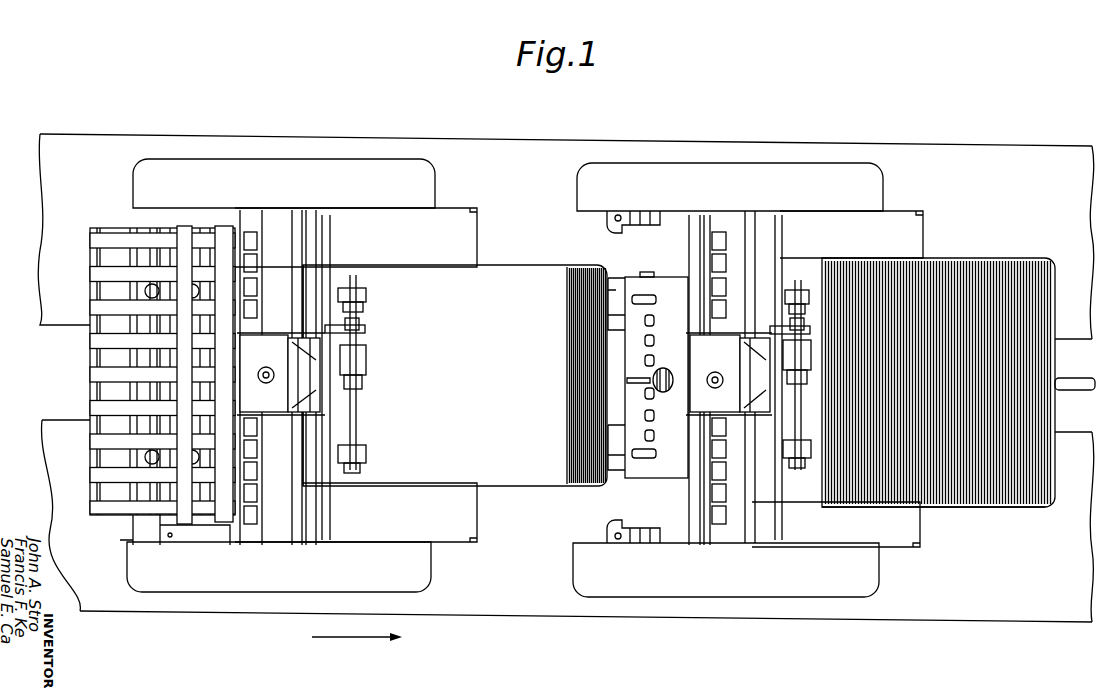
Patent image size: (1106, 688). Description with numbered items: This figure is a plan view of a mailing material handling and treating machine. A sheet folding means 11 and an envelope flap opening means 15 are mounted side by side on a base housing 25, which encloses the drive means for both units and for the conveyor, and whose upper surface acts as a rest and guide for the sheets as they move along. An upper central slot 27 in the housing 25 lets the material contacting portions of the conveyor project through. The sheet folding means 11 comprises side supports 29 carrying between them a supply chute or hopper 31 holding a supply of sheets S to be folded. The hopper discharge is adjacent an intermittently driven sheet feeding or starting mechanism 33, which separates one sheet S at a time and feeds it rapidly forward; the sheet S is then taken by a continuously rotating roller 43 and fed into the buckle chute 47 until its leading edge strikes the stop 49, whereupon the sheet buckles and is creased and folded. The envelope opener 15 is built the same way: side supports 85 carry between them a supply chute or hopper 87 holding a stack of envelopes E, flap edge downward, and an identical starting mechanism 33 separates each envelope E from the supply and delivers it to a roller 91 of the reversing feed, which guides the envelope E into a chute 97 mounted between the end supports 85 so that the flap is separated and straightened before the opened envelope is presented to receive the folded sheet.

The sheet folding means 11 is at (283, 155).
The envelope flap opening means 15 is at (782, 157).
The base housing 25 is at (1003, 146).
The upper central slot 27 is at (1068, 344).
The side supports 29 is at (388, 206).
The supply chute or hopper 31 is at (513, 490).
The sheet feeding or starting mechanism 33 is at (372, 352).
The continuously rotating roller 43 is at (282, 247).
The buckle chute 47 is at (157, 507).
The stop 49 is at (196, 425).
The side supports 85 is at (883, 191).
The supply chute or hopper 87 is at (1008, 508).
The roller 91 is at (728, 248).
The chute 97 is at (671, 288).
The sheet S is at (503, 292).
The envelope E is at (985, 280).